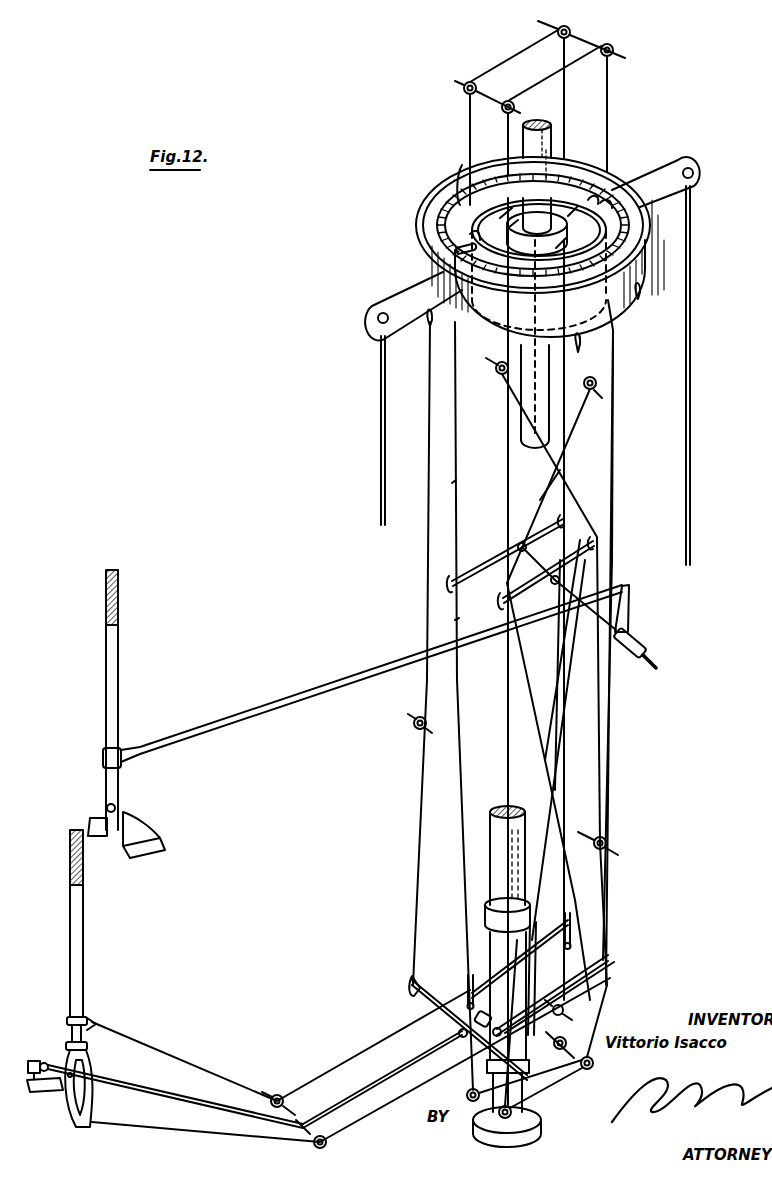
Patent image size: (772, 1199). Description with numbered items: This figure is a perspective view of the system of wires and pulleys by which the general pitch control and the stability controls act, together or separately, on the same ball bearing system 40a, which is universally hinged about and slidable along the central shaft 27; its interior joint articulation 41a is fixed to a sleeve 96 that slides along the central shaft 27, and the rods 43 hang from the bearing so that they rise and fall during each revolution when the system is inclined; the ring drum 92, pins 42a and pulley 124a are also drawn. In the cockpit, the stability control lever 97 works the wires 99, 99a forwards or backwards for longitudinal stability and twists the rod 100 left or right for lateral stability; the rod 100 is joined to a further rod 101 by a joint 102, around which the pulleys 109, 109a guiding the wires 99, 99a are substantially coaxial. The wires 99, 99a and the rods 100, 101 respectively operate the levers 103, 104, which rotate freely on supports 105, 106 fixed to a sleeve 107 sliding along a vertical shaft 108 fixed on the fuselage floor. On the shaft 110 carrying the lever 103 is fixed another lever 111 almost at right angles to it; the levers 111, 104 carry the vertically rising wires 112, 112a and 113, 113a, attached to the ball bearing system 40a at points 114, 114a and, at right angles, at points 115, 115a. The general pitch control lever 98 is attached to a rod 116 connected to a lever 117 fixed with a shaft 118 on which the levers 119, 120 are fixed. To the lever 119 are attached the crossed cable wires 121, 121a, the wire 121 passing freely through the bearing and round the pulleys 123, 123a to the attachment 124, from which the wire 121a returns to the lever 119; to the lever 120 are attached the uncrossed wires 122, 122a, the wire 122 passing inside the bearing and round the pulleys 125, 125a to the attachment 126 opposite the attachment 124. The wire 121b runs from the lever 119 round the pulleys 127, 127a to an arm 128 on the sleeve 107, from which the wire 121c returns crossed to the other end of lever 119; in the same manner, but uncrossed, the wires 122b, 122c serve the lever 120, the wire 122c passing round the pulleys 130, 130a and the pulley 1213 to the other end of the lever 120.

The central shaft 27 is at (530, 143).
The ball bearing system 40a is at (430, 202).
The interior joint articulation 41a is at (545, 196).
The trunnion pins 42a is at (594, 192).
The rods 43 is at (690, 354).
The ring drum 92 is at (430, 190).
The sleeve 96 is at (567, 214).
The stability control lever 97 is at (80, 963).
The general pitch control lever 98 is at (118, 615).
The wire 99 is at (133, 1041).
The wire 99a is at (170, 1126).
The rod 100 is at (148, 1091).
The rod 101 is at (383, 1081).
The joint 102 is at (300, 1137).
The lever 103 is at (568, 978).
The lever 104 is at (410, 989).
The support 105 is at (550, 994).
The support 106 is at (460, 1027).
The sleeve 107 is at (472, 992).
The vertical shaft 108 is at (495, 856).
The pulley 109 is at (280, 1095).
The pulley 109a is at (328, 1147).
The shaft 110 is at (575, 1011).
The lever 111 is at (595, 979).
The wire 112 is at (508, 471).
The wire 112a is at (600, 791).
The wire 113 is at (428, 539).
The wire 113a is at (612, 507).
The attachment point 114 is at (460, 168).
The attachment point 114a is at (580, 350).
The attachment point 115 is at (428, 326).
The attachment point 115a is at (637, 298).
The rod 116 is at (230, 709).
The lever 117 is at (630, 623).
The shaft 118 is at (500, 579).
The lever 119 is at (600, 571).
The lever 120 is at (516, 539).
The cable wire 121 is at (548, 79).
The cable wire 121a is at (540, 501).
The wire 121b is at (555, 787).
The wire 121c is at (520, 706).
The wire 122 is at (505, 60).
The wire 122a is at (452, 484).
The wire 122b is at (455, 621).
The wire 122c is at (565, 761).
The pulley 123 is at (515, 108).
The pulley 123a is at (614, 52).
The attachment point 124 is at (608, 200).
The pulley 124a is at (575, 411).
The pulley 125 is at (568, 28).
The pulley 125a is at (465, 88).
The attachment point 126 is at (456, 249).
The pulley 127 is at (490, 1138).
The pulley 127a is at (590, 1070).
The arm 128 is at (550, 931).
The pulley 130 is at (470, 1103).
The pulley 130a is at (540, 1088).
The pulley 1213 is at (575, 1041).